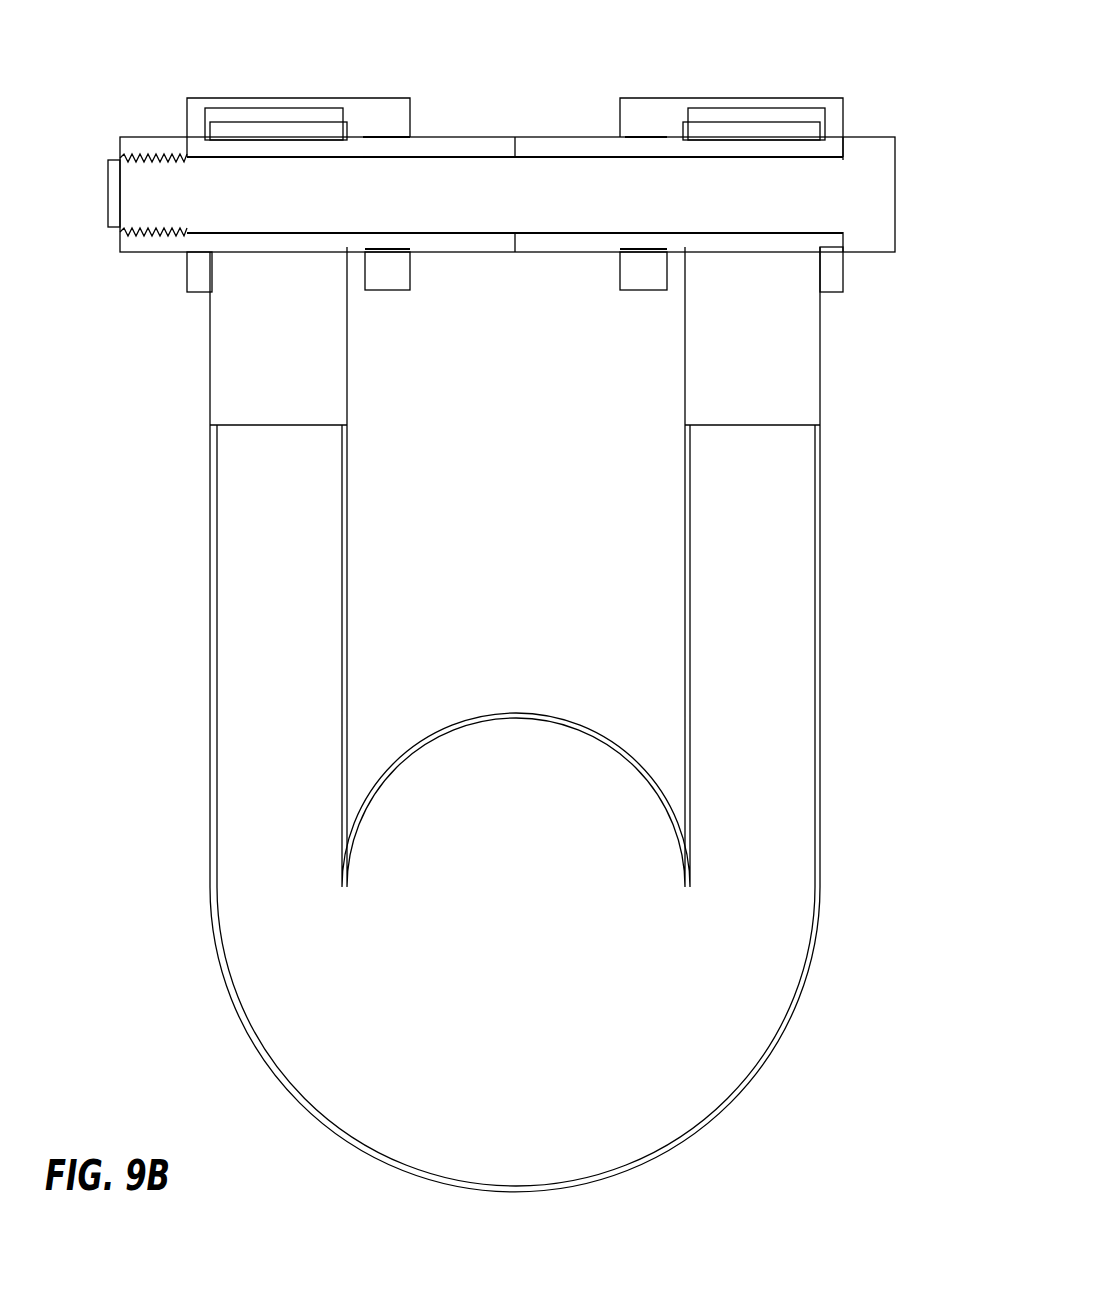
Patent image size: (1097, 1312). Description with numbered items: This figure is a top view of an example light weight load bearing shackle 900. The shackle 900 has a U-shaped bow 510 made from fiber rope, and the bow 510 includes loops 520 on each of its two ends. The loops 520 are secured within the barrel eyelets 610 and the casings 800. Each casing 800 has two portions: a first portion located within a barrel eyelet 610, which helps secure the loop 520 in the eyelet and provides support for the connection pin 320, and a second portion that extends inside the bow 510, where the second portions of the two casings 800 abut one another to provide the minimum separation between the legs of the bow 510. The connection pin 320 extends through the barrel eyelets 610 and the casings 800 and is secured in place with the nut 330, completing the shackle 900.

The light weight load bearing shackle 900 is at (513, 603).
The bow 510 is at (242, 832).
The loops 520 is at (283, 362).
The casings 800 is at (458, 245).
The barrel eyelets 610 is at (357, 113).
The connection pin 320 is at (870, 170).
The nut 330 is at (152, 147).